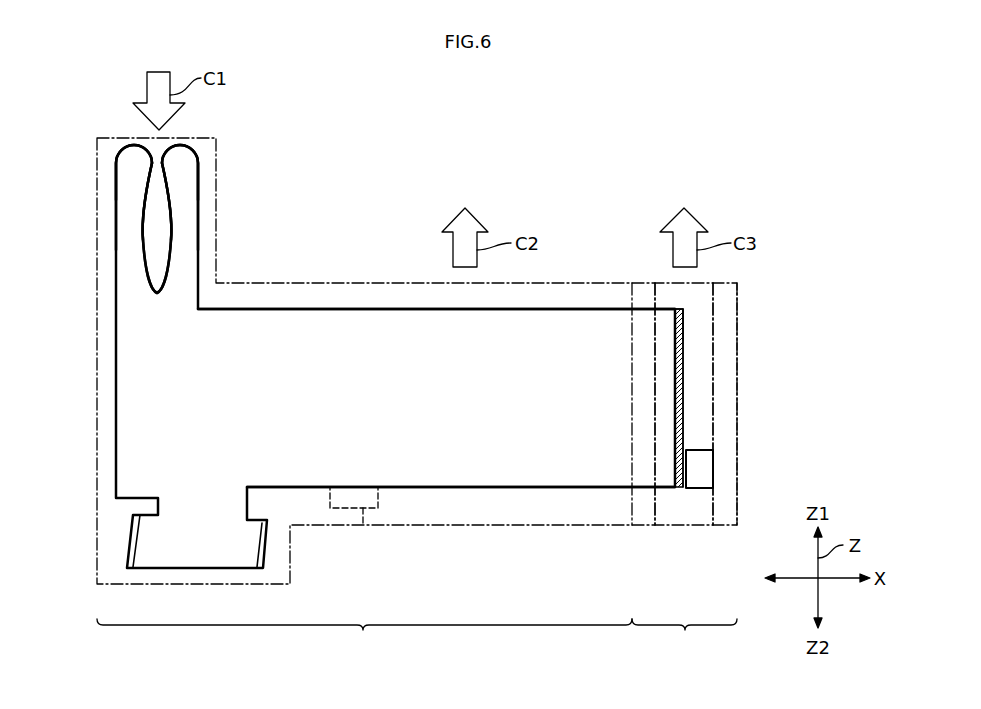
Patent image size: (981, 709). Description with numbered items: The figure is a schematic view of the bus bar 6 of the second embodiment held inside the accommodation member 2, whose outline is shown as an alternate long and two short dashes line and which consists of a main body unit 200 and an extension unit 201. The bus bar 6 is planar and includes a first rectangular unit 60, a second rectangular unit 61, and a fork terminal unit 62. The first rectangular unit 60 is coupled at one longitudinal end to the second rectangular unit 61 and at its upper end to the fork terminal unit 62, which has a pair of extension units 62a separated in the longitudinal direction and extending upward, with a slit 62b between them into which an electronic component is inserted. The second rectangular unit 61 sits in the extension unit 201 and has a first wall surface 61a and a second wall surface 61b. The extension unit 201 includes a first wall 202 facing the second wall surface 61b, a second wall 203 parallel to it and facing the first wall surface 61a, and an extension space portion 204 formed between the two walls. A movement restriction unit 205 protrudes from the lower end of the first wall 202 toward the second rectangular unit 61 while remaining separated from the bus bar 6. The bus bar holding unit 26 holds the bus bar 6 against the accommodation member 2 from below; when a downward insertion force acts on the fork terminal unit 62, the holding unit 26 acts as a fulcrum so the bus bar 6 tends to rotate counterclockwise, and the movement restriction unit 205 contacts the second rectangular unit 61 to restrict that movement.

The accommodation member 2 is at (337, 284).
The bus bar 6 is at (563, 310).
The bus bar holding unit 26 is at (363, 526).
The first rectangular unit 60 is at (398, 328).
The second rectangular unit 61 is at (684, 404).
The first wall surface 61a is at (679, 337).
The second wall surface 61b is at (684, 366).
The fork terminal unit 62 is at (190, 147).
The extension units 62a is at (183, 177).
The slit 62b is at (158, 218).
The main body unit 200 is at (364, 638).
The extension unit 201 is at (684, 638).
The first wall 202 is at (718, 512).
The second wall 203 is at (643, 512).
The extension space portion 204 is at (683, 508).
The movement restriction unit 205 is at (713, 455).